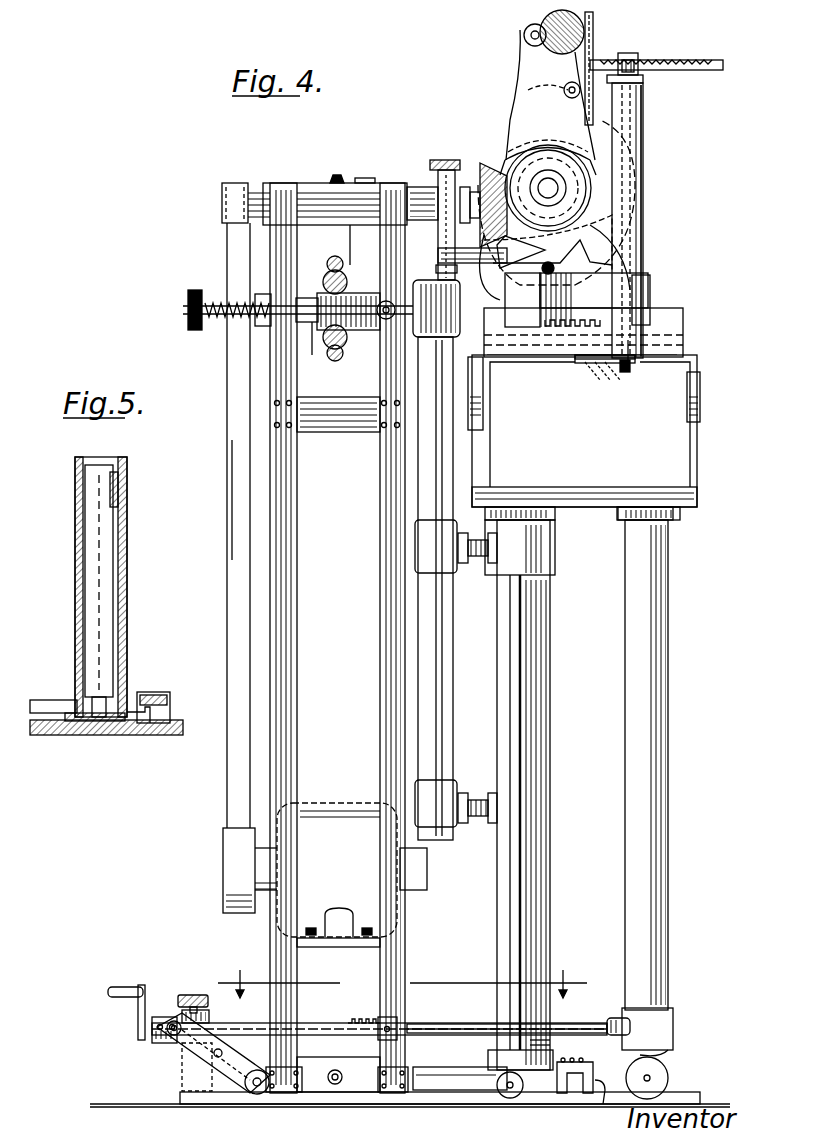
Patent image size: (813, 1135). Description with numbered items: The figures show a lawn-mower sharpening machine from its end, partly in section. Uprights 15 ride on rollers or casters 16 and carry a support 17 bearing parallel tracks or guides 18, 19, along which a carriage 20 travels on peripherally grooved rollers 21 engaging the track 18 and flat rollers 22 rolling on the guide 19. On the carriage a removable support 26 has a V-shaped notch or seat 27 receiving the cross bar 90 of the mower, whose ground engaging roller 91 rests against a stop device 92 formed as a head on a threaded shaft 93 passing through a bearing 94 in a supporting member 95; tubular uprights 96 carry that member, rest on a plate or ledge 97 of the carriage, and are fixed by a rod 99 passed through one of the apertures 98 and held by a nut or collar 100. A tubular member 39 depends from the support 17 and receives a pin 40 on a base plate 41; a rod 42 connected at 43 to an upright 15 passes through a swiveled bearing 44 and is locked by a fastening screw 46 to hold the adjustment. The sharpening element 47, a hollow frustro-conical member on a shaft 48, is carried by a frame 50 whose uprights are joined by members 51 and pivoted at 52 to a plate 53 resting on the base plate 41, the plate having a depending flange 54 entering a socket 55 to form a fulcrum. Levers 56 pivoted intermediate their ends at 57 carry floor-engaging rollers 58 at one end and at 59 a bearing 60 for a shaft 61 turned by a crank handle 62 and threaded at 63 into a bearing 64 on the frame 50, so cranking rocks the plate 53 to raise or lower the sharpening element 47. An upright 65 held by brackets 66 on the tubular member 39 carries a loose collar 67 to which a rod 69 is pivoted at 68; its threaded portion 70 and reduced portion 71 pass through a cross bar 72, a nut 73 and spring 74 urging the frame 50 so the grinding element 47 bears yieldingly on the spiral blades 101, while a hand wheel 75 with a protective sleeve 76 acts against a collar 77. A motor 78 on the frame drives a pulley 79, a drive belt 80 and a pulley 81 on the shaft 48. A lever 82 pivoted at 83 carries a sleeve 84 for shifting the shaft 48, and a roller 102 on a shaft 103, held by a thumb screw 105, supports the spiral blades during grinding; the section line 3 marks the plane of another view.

In FIG. 4, the section line 3 is at (402, 974).
In FIG. 4, the uprights 15 is at (650, 638).
In FIG. 4, the rollers or casters 16 is at (668, 1076).
In FIG. 4, the support 17 is at (588, 488).
In FIG. 4, the track or guide 18 is at (478, 473).
In FIG. 4, the track or guide 19 is at (692, 456).
In FIG. 4, the carriage 20 is at (676, 354).
In FIG. 4, the peripherally grooved rollers 21 is at (473, 357).
In FIG. 4, the flat rollers 22 is at (700, 405).
In FIG. 4, the support 26 is at (650, 285).
In FIG. 4, the notch or seat 27 is at (553, 280).
In FIG. 4, the tubular member 39 is at (535, 728).
In FIG. 5, the tubular member 39 is at (127, 628).
In FIG. 4, the pin or projection 40 is at (553, 1041).
In FIG. 5, the pin or projection 40 is at (105, 666).
In FIG. 4, the base plate or member 41 is at (206, 1095).
In FIG. 5, the base plate or member 41 is at (155, 736).
In FIG. 4, the bar or rod 42 is at (456, 1023).
In FIG. 4, the connection 43 is at (612, 1018).
In FIG. 4, the bearing 44 is at (222, 1018).
In FIG. 4, the fastening screw 46 is at (194, 994).
In FIG. 4, the sharpening element 47 is at (487, 172).
In FIG. 4, the shaft 48 is at (466, 186).
In FIG. 4, the frame 50 is at (385, 487).
In FIG. 4, the members 51 is at (360, 1073).
In FIG. 4, the pivots 52 is at (333, 1070).
In FIG. 4, the plate or member 53 is at (443, 1070).
In FIG. 5, the plate or member 53 is at (52, 700).
In FIG. 4, the depending flange 54 is at (593, 1075).
In FIG. 5, the depending flange 54 is at (170, 684).
In FIG. 4, the socket or recess 55 is at (607, 1102).
In FIG. 5, the socket or recess 55 is at (166, 712).
In FIG. 4, the levers 56 is at (192, 1042).
In FIG. 4, the pivot 57 is at (224, 1053).
In FIG. 4, the rollers 58 is at (262, 1092).
In FIG. 4, the pivotal connection 59 is at (170, 1035).
In FIG. 4, the bearing 60 is at (163, 1017).
In FIG. 4, the shaft 61 is at (262, 1023).
In FIG. 4, the crank handle 62 is at (140, 984).
In FIG. 4, the threaded portion 63 is at (352, 1022).
In FIG. 4, the bearing 64 is at (380, 1017).
In FIG. 4, the upright 65 is at (445, 642).
In FIG. 4, the brackets 66 is at (456, 673).
In FIG. 4, the collar 67 is at (436, 308).
In FIG. 4, the pivot 68 is at (388, 290).
In FIG. 4, the rod 69 is at (348, 345).
In FIG. 4, the threaded portion 70 is at (312, 296).
In FIG. 4, the reduced portion 71 is at (212, 303).
In FIG. 4, the cross bar 72 is at (270, 268).
In FIG. 4, the nut 73 is at (185, 322).
In FIG. 4, the spring 74 is at (212, 318).
In FIG. 4, the hand wheel 75 is at (335, 256).
In FIG. 4, the sleeve 76 is at (350, 250).
In FIG. 4, the sleeve or collar 77 is at (312, 324).
In FIG. 4, the motor 78 is at (352, 870).
In FIG. 4, the pulley 79 is at (222, 853).
In FIG. 4, the drive belt 80 is at (226, 532).
In FIG. 4, the pulley 81 is at (220, 195).
In FIG. 4, the lever 82 is at (350, 182).
In FIG. 4, the pivot 83 is at (336, 175).
In FIG. 4, the sleeve 84 is at (418, 200).
In FIG. 4, the cross bar 90 is at (590, 260).
In FIG. 4, the ground engaging roller 91 is at (540, 18).
In FIG. 4, the stop device 92 is at (590, 33).
In FIG. 4, the threaded shaft 93 is at (696, 64).
In FIG. 4, the bearing 94 is at (628, 58).
In FIG. 4, the supporting member 95 is at (643, 80).
In FIG. 4, the uprights 96 is at (641, 182).
In FIG. 4, the plate or ledge 97 is at (632, 352).
In FIG. 4, the apertures 98 is at (593, 377).
In FIG. 4, the rod or bar 99 is at (628, 126).
In FIG. 4, the nut or collar 100 is at (440, 250).
In FIG. 4, the spiral blades 101 is at (505, 138).
In FIG. 4, the roller 102 is at (520, 240).
In FIG. 4, the shaft 103 is at (456, 298).
In FIG. 4, the thumb screw 105 is at (440, 162).